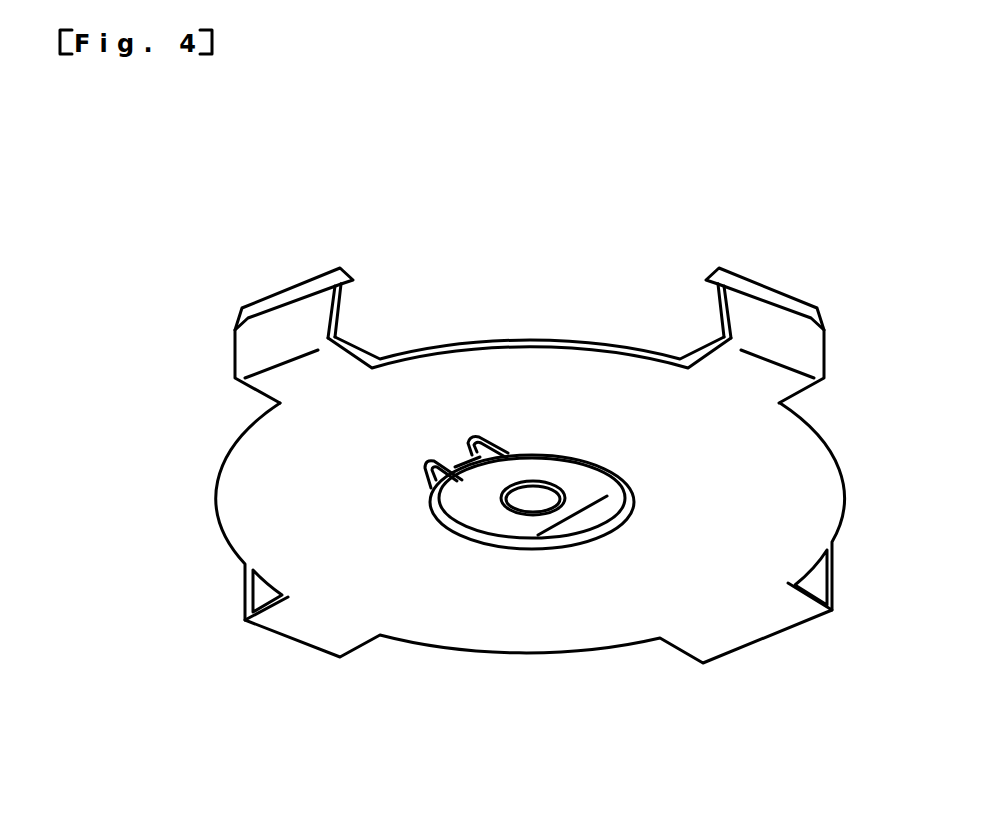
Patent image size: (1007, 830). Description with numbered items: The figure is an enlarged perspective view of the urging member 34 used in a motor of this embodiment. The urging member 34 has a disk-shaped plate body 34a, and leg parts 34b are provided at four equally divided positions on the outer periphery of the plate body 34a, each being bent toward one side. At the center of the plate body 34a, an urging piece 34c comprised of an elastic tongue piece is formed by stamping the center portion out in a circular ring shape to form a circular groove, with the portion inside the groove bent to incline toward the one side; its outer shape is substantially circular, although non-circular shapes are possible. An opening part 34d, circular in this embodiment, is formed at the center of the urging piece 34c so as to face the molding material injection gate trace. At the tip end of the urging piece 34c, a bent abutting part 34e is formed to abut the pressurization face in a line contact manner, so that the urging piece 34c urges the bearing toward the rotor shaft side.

The urging member 34 is at (255, 272).
The plate body 34a is at (525, 640).
The leg parts 34b is at (312, 280).
The urging piece 34c is at (480, 492).
The opening part 34d is at (535, 496).
The abutting part 34e is at (592, 498).